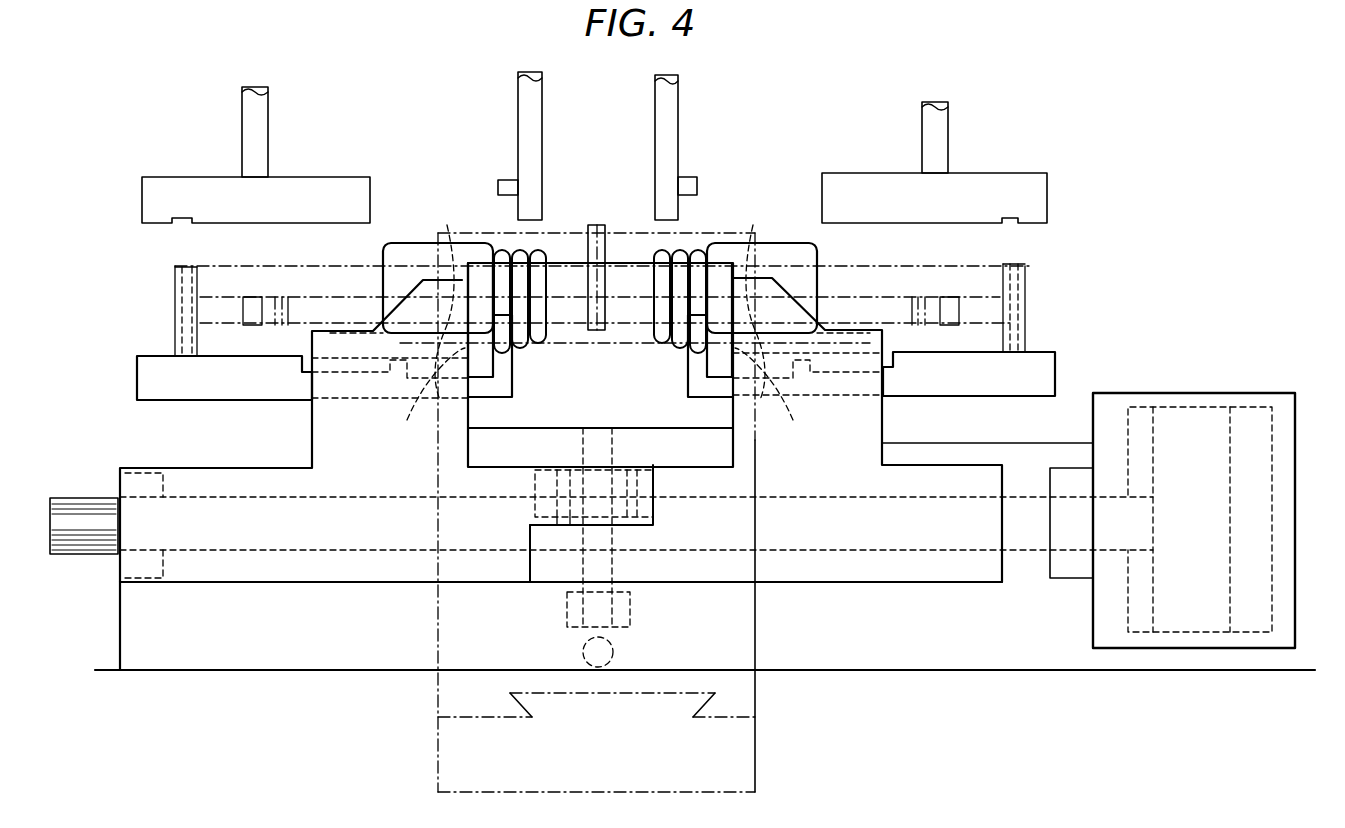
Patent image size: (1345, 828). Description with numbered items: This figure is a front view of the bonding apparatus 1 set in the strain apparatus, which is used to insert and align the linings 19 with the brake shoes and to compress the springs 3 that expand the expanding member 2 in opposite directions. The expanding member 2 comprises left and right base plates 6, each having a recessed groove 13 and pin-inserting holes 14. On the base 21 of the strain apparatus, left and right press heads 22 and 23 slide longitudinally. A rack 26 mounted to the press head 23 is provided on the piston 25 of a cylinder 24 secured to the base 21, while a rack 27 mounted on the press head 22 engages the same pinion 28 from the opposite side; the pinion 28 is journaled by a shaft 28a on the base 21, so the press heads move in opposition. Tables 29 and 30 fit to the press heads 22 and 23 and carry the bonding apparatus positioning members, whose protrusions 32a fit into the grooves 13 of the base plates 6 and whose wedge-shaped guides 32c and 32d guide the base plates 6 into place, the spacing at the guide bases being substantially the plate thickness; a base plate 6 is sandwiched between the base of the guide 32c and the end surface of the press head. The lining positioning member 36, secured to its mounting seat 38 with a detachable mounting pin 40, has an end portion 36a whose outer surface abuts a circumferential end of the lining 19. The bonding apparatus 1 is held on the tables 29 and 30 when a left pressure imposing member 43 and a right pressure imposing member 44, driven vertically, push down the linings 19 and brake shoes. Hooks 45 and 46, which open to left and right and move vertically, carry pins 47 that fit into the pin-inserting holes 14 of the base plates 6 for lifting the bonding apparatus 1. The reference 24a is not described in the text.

The bonding apparatus 1 is at (1022, 258).
The expanding member 2 is at (793, 240).
The springs 3 is at (660, 252).
The base plate 6 is at (495, 363).
The recessed groove 13 is at (472, 330).
The pin-inserting holes 14 is at (530, 297).
The linings 19 is at (172, 330).
The base 21 is at (1045, 452).
The press head 22 is at (420, 290).
The press head 23 is at (787, 283).
The cylinder 24 is at (1238, 390).
The motor shaft 24a is at (1267, 437).
The piston 25 is at (1073, 543).
The rack 26 is at (553, 520).
The rack 27 is at (540, 458).
The pinion 28 is at (643, 512).
The shaft 28a is at (607, 448).
The table 29 is at (147, 357).
The table 30 is at (1047, 347).
The protrusion 32a is at (591, 397).
The wedge-shaped guide 32c is at (535, 347).
The wedge-shaped guide 32d is at (611, 292).
The lining positioning member 36 is at (920, 298).
The end portion 36a is at (282, 300).
The mounting seat 38 is at (750, 600).
The mounting pin 40 is at (597, 222).
The left pressure imposing member 43 is at (230, 182).
The right pressure imposing member 44 is at (1018, 180).
The hook 45 is at (518, 112).
The hook 46 is at (667, 117).
The pins 47 is at (508, 178).